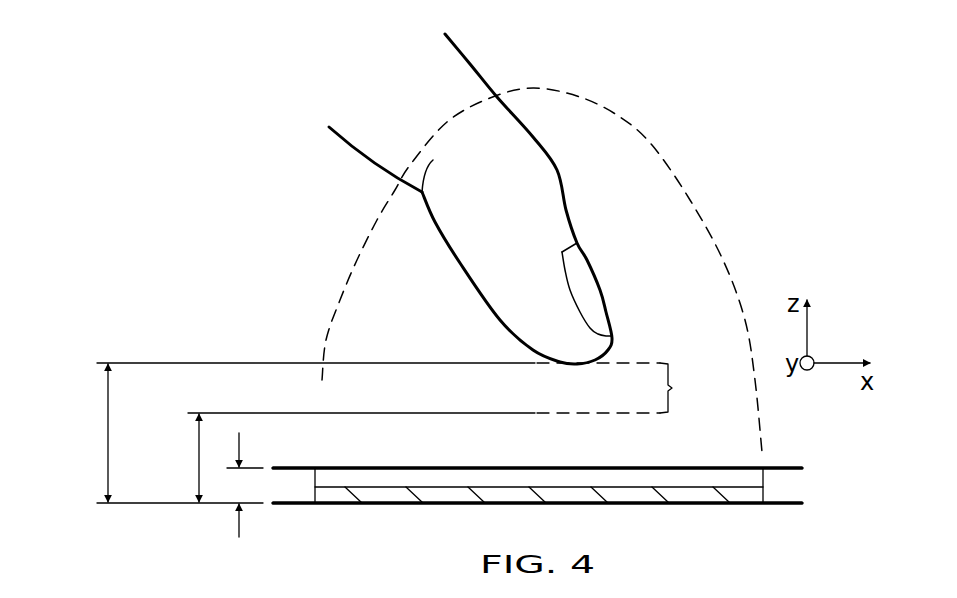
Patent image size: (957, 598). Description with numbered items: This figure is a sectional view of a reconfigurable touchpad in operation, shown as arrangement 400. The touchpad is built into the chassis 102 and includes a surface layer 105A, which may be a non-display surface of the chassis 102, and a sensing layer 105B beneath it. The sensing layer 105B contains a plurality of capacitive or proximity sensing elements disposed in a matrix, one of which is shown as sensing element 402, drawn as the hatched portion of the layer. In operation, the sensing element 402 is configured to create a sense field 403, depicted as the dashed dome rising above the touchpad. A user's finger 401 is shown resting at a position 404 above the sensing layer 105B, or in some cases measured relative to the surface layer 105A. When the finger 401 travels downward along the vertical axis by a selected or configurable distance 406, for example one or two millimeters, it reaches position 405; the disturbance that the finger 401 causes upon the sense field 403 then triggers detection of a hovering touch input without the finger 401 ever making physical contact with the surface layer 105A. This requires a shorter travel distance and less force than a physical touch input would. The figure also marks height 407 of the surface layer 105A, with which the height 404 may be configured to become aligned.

The system / arrangement 400 is at (742, 180).
The finger 401 is at (497, 46).
The sensing element 402 is at (335, 497).
The sense field 403 is at (653, 143).
The position 404 is at (106, 430).
The position 405 is at (198, 458).
The distance 406 is at (691, 388).
The height 407 is at (238, 530).
The chassis 102 is at (537, 513).
The surface layer 105A is at (785, 457).
The sensing layer 105B is at (785, 492).